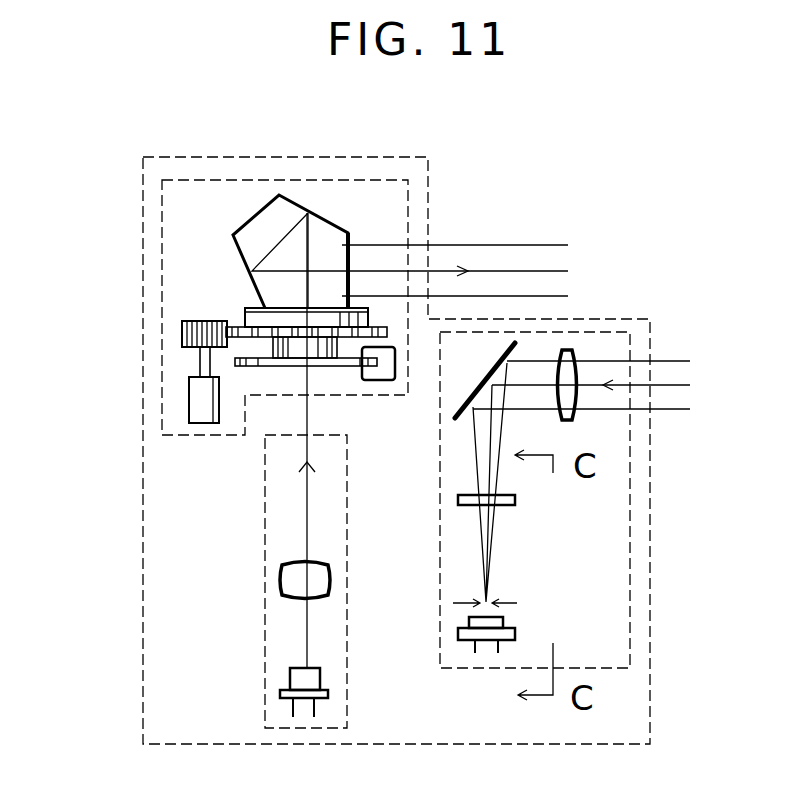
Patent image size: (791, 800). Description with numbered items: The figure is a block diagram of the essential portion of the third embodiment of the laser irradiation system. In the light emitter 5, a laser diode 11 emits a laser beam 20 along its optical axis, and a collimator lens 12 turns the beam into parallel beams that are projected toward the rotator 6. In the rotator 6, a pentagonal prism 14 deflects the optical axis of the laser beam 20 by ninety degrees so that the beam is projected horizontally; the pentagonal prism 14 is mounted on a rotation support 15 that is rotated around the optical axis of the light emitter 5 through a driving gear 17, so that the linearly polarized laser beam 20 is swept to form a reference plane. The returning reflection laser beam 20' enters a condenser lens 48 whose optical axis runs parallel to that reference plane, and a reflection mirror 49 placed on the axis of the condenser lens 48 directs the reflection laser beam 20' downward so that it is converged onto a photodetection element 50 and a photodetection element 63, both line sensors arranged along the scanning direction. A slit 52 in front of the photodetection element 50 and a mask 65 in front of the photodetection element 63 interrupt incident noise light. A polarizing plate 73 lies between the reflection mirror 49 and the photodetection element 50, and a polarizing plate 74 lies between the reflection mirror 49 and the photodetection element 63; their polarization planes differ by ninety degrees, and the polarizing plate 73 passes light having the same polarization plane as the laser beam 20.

The light emitter 5 is at (265, 550).
The rotator 6 is at (162, 233).
The laser diode 11 is at (290, 680).
The collimator lens 12 is at (328, 565).
The pentagonal prism 14 is at (328, 218).
The rotation support 15 is at (237, 322).
The driving gear 17 is at (182, 331).
The laser beam 20 is at (459, 216).
The reflection laser beam 20' is at (607, 450).
The condenser lens 48 is at (568, 340).
The reflection mirror 49 is at (470, 391).
The photodetection element 50 is at (530, 611).
The photodetection element 63 is at (517, 633).
The slit 52 is at (444, 667).
The mask 65 is at (453, 603).
The polarizing plate 73 is at (530, 525).
The polarizing plate 74 is at (503, 505).